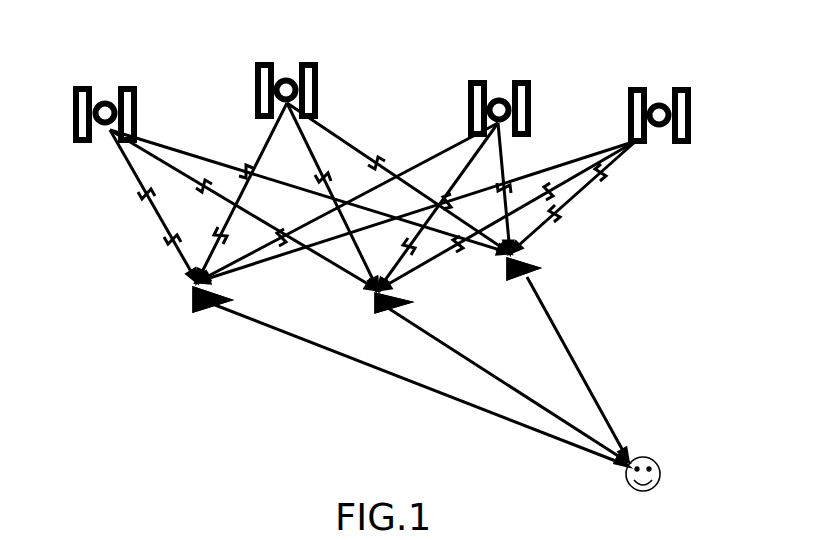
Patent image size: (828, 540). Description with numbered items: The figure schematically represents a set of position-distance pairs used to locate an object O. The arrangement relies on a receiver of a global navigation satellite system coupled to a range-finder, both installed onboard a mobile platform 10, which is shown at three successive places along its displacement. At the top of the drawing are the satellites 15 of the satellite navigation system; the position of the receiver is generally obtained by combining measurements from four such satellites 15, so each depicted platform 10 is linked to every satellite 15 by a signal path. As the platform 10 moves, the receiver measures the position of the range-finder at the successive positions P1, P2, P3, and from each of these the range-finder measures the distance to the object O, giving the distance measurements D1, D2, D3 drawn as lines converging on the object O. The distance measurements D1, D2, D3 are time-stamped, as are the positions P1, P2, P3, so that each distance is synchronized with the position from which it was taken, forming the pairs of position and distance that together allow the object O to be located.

The satellites 15 is at (643, 88).
The mobile platform 10 is at (193, 297).
The position P1 is at (202, 313).
The position P2 is at (372, 310).
The position P3 is at (539, 265).
The distance measurement D1 is at (419, 384).
The distance measurement D2 is at (508, 385).
The distance measurement D3 is at (577, 368).
The object O is at (654, 462).